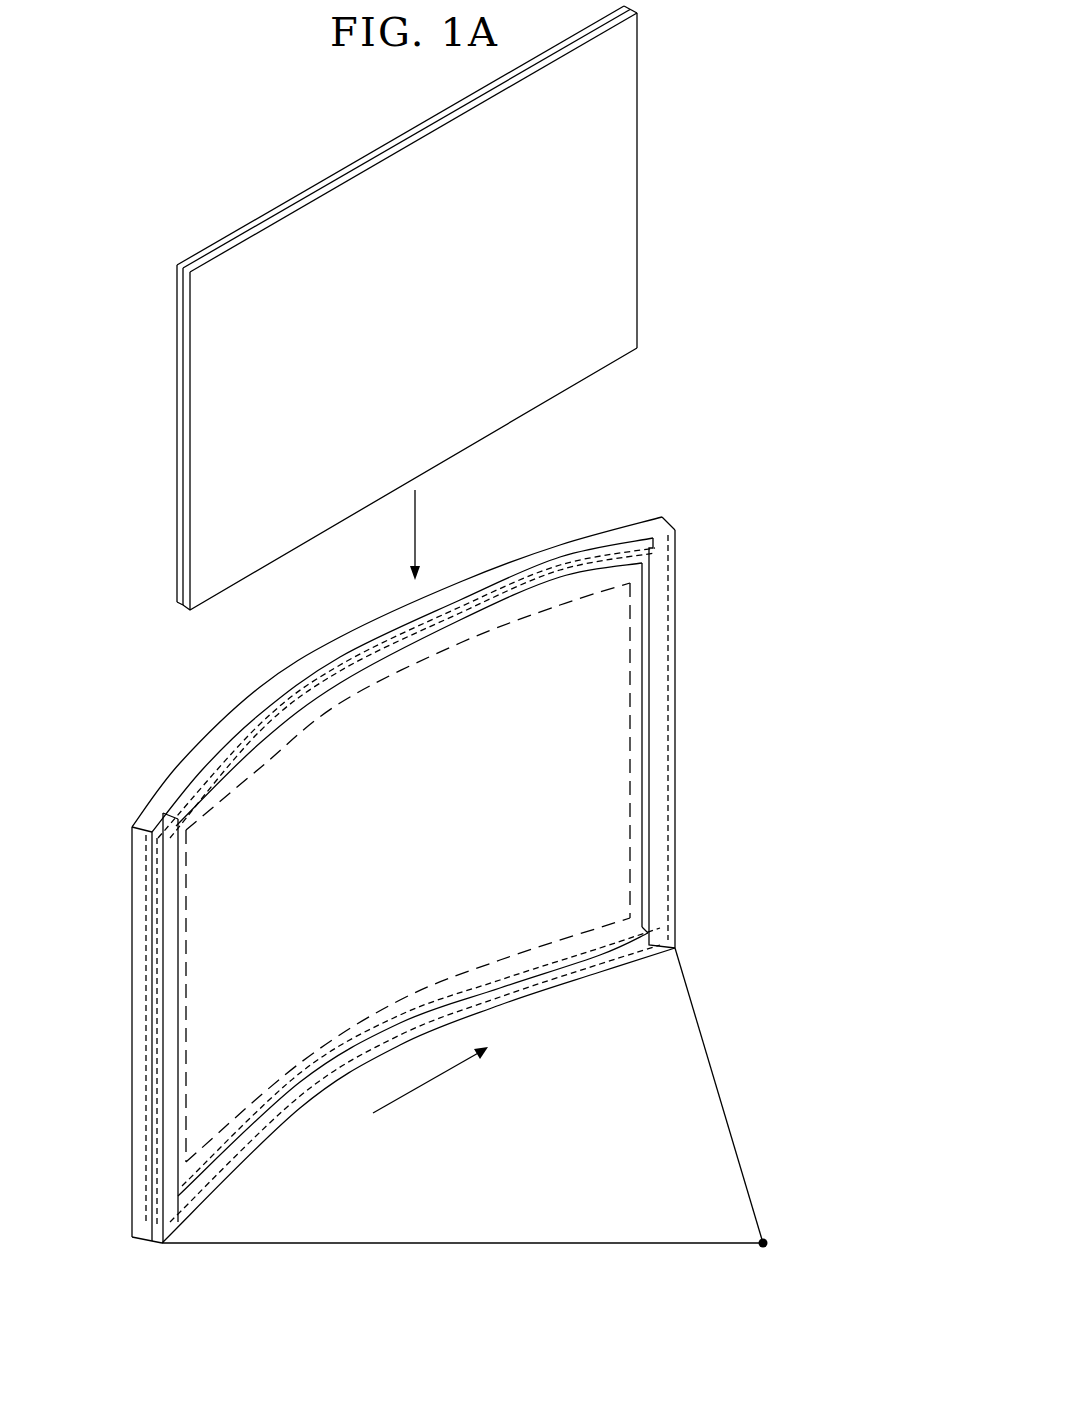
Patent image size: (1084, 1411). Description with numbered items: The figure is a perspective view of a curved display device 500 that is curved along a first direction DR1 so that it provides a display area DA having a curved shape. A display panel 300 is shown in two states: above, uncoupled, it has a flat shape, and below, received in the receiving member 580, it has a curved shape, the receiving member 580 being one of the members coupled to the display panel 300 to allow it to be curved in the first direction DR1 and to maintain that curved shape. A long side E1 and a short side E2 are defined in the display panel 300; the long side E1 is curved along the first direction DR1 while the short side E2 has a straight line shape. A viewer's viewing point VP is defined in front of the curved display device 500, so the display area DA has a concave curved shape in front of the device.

The display panel 300 is at (658, 194).
The curved display device 500 is at (678, 513).
The receiving member 580 is at (595, 540).
The display area DA is at (632, 777).
The long side E1 is at (214, 255).
The short side E2 is at (183, 411).
The first direction DR1 is at (430, 1080).
The viewing point VP is at (481, 1102).